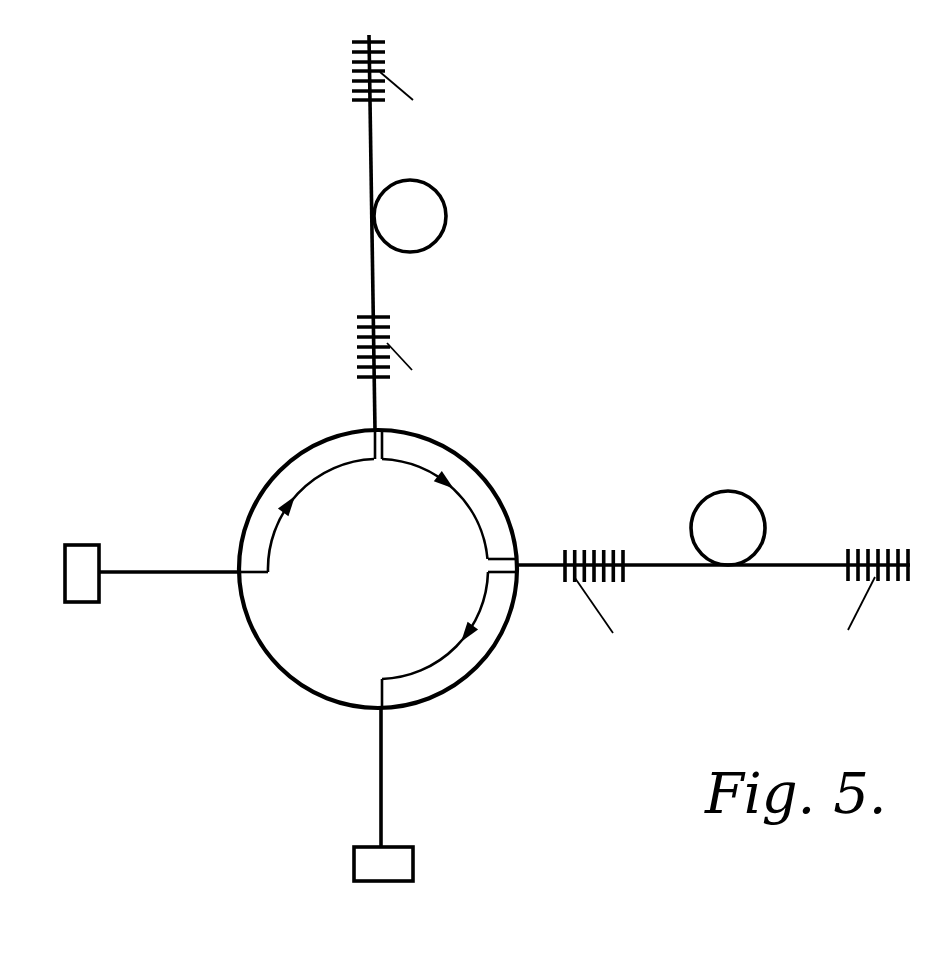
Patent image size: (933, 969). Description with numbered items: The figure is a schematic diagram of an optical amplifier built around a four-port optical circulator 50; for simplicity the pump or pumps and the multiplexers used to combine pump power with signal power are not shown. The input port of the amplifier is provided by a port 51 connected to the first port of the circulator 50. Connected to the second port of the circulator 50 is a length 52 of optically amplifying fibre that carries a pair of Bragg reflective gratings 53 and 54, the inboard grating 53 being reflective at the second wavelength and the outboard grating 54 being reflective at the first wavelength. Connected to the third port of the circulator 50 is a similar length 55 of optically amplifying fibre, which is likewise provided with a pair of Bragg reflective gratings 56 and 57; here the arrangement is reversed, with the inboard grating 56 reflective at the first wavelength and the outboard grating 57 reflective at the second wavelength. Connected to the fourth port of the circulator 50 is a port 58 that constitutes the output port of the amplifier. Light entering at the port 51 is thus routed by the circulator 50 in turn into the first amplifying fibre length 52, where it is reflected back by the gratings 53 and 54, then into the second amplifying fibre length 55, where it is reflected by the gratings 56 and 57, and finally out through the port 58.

The four-port optical circulator 50 is at (341, 601).
The port 51 is at (77, 563).
The length of optically amplifying fibre 52 is at (443, 217).
The inboard Bragg reflective grating 53 is at (370, 347).
The outboard Bragg reflective grating 54 is at (357, 59).
The length of optically amplifying fibre 55 is at (727, 490).
The inboard Bragg reflective grating 56 is at (585, 552).
The outboard Bragg reflective grating 57 is at (900, 548).
The port 58 is at (387, 862).